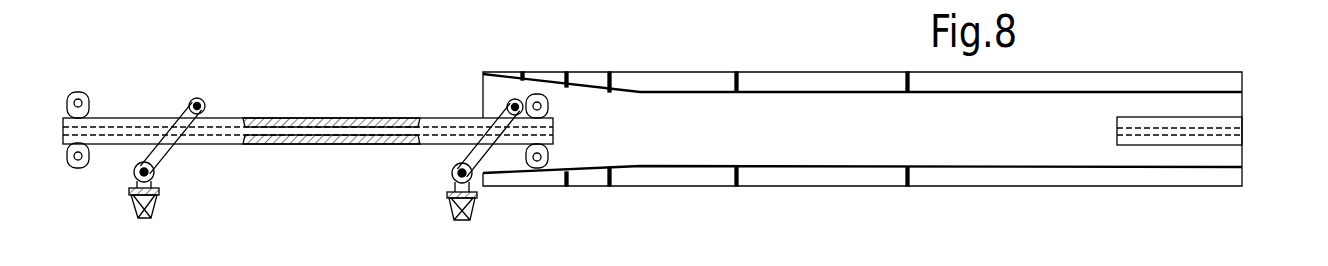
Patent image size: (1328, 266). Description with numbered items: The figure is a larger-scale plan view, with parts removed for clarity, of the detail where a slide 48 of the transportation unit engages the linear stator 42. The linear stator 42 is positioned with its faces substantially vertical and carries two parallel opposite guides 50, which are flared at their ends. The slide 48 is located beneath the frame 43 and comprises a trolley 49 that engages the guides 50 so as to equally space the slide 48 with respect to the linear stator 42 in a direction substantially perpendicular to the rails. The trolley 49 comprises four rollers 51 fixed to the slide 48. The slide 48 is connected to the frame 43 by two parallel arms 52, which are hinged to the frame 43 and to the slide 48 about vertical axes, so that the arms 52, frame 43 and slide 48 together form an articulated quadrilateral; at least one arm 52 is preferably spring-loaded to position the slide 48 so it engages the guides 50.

The linear stator 42 is at (1248, 127).
The frame 43 is at (146, 222).
The slide 48 is at (345, 160).
The trolley 49 is at (308, 96).
The guides 50 is at (705, 86).
The rollers 51 is at (88, 96).
The arms 52 is at (163, 152).